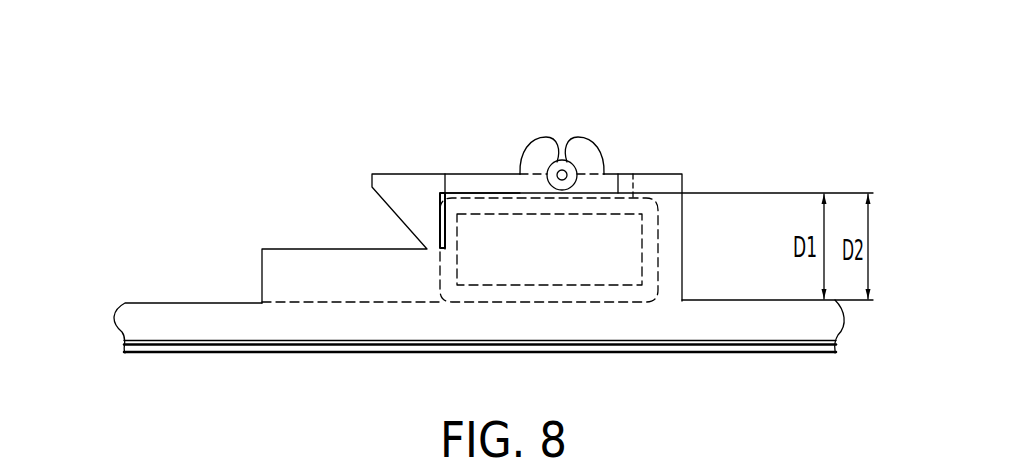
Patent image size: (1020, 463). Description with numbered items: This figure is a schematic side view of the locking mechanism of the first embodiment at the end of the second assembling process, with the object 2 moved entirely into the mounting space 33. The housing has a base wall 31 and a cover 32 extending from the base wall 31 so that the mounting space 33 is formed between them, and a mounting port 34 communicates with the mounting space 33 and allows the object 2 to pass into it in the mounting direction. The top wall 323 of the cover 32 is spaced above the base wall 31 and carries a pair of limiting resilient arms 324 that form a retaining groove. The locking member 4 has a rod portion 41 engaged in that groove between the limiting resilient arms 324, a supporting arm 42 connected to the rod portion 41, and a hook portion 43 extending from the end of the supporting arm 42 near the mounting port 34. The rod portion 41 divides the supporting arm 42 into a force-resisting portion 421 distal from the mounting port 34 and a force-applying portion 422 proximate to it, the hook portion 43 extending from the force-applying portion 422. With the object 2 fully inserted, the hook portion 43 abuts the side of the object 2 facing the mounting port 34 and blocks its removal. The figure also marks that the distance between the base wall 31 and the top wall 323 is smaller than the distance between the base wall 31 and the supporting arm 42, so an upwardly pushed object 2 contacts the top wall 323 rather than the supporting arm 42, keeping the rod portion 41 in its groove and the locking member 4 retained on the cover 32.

The object 2 is at (572, 262).
The locking member 4 is at (467, 186).
The base wall 31 is at (750, 301).
The cover 32 is at (632, 189).
The mounting space 33 is at (659, 258).
The mounting port 34 is at (440, 235).
The rod portion 41 is at (561, 160).
The supporting arm 42 is at (457, 172).
The hook portion 43 is at (407, 204).
The top wall 323 is at (641, 192).
The limiting resilient arms 324 is at (542, 152).
The force-resisting portion 421 is at (609, 189).
The force-applying portion 422 is at (482, 156).